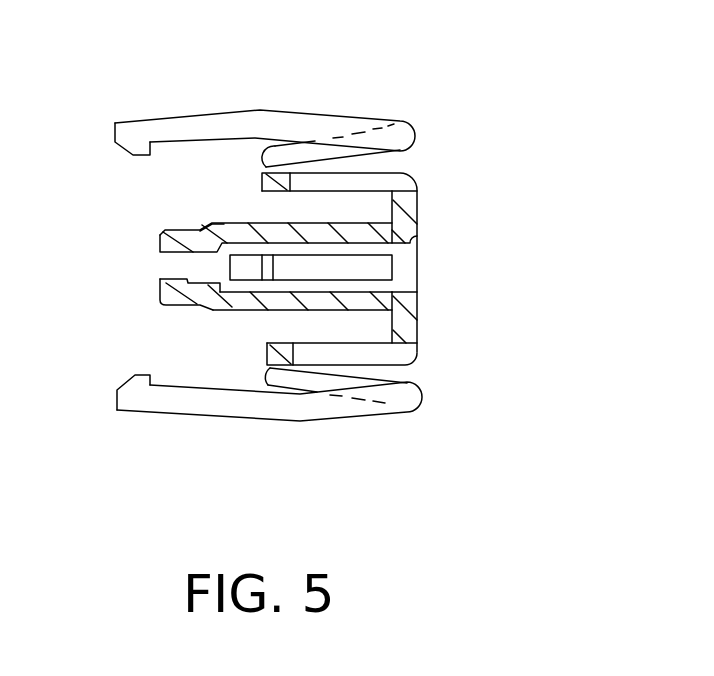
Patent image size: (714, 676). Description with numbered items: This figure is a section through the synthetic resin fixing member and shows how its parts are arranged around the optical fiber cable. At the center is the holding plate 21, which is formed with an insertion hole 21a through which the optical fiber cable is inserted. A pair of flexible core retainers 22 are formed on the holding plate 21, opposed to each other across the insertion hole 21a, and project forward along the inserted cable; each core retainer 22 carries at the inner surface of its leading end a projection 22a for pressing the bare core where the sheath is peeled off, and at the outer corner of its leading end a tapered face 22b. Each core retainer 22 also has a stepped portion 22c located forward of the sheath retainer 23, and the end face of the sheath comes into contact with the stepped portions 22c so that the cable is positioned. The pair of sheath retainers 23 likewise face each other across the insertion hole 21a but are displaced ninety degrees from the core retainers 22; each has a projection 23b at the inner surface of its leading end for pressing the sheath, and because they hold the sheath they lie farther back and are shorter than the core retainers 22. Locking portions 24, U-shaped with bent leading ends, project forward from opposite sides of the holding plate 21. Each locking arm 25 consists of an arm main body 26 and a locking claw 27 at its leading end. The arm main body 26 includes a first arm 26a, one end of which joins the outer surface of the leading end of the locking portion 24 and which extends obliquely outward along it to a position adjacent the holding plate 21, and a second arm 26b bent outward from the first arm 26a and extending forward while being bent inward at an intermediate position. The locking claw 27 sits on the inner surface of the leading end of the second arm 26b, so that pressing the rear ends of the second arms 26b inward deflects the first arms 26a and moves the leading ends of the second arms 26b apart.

The holding plate 21 is at (405, 230).
The insertion hole 21a is at (395, 283).
The core retainer 22 is at (252, 303).
The projection 22a is at (162, 290).
The tapered face 22b is at (160, 234).
The stepped portion 22c is at (223, 224).
The sheath retainer 23 is at (313, 263).
The projection 23b is at (262, 267).
The locking portion 24 is at (383, 358).
The locking arm 25 is at (145, 106).
The arm main body 26 is at (546, 52).
The first arm 26a is at (380, 150).
The second arm 26b is at (363, 117).
The locking claw 27 is at (130, 139).